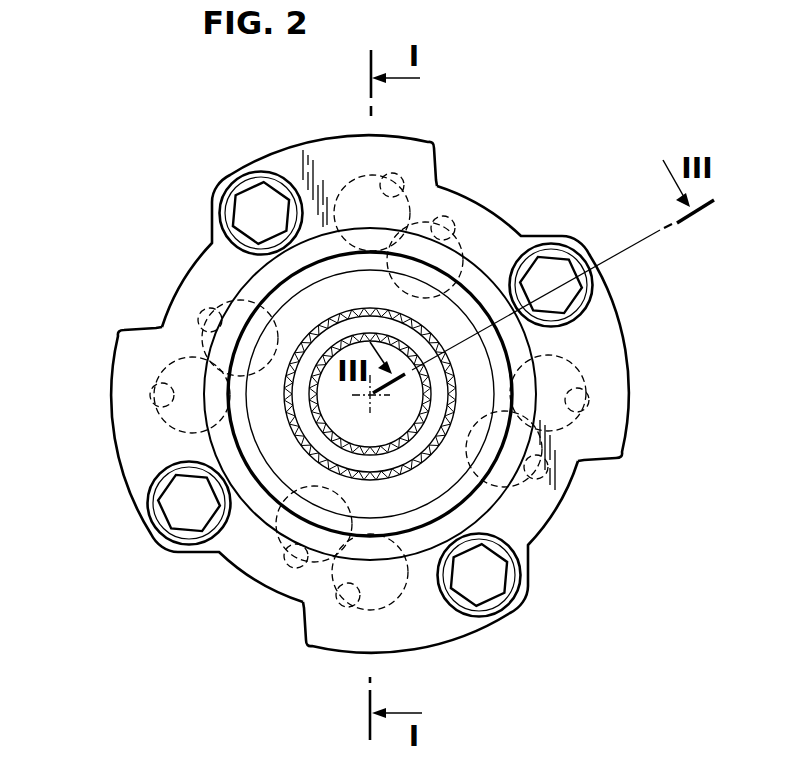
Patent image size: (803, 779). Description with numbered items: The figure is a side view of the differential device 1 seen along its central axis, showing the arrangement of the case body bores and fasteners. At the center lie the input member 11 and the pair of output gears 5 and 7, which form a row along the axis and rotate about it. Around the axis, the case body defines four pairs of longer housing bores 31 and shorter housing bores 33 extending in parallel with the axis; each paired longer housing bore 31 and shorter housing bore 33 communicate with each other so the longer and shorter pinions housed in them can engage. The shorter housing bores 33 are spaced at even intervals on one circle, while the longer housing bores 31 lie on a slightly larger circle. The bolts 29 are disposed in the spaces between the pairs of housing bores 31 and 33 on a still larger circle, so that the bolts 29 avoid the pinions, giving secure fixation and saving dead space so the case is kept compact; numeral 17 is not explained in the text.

The differential device 1 is at (612, 145).
The output gear 5 is at (288, 387).
The output gear 7 is at (393, 428).
The input member 11 is at (327, 447).
The flange 17 is at (118, 452).
The bolt 29 is at (265, 210).
The longer housing bore 31 is at (388, 178).
The shorter housing bore 33 is at (443, 215).